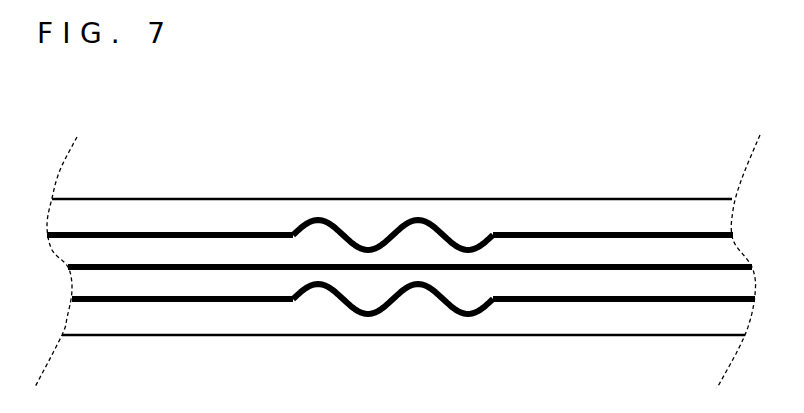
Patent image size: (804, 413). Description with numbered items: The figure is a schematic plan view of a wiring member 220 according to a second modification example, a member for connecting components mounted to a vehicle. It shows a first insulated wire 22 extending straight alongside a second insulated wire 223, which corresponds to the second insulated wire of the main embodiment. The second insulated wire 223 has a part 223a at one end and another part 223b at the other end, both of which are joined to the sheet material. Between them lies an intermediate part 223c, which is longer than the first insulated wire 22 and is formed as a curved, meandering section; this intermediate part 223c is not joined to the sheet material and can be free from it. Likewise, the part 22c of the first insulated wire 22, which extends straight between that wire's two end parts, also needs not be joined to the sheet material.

The wiring member 220 is at (517, 172).
The first insulated wire 22 is at (702, 265).
The part of the first insulated wire 22c is at (350, 264).
The second insulated wire 223 is at (655, 232).
The part of the second insulated wire 223a is at (590, 232).
The other part of the second insulated wire 223b is at (193, 232).
The intermediate part 223c is at (419, 220).